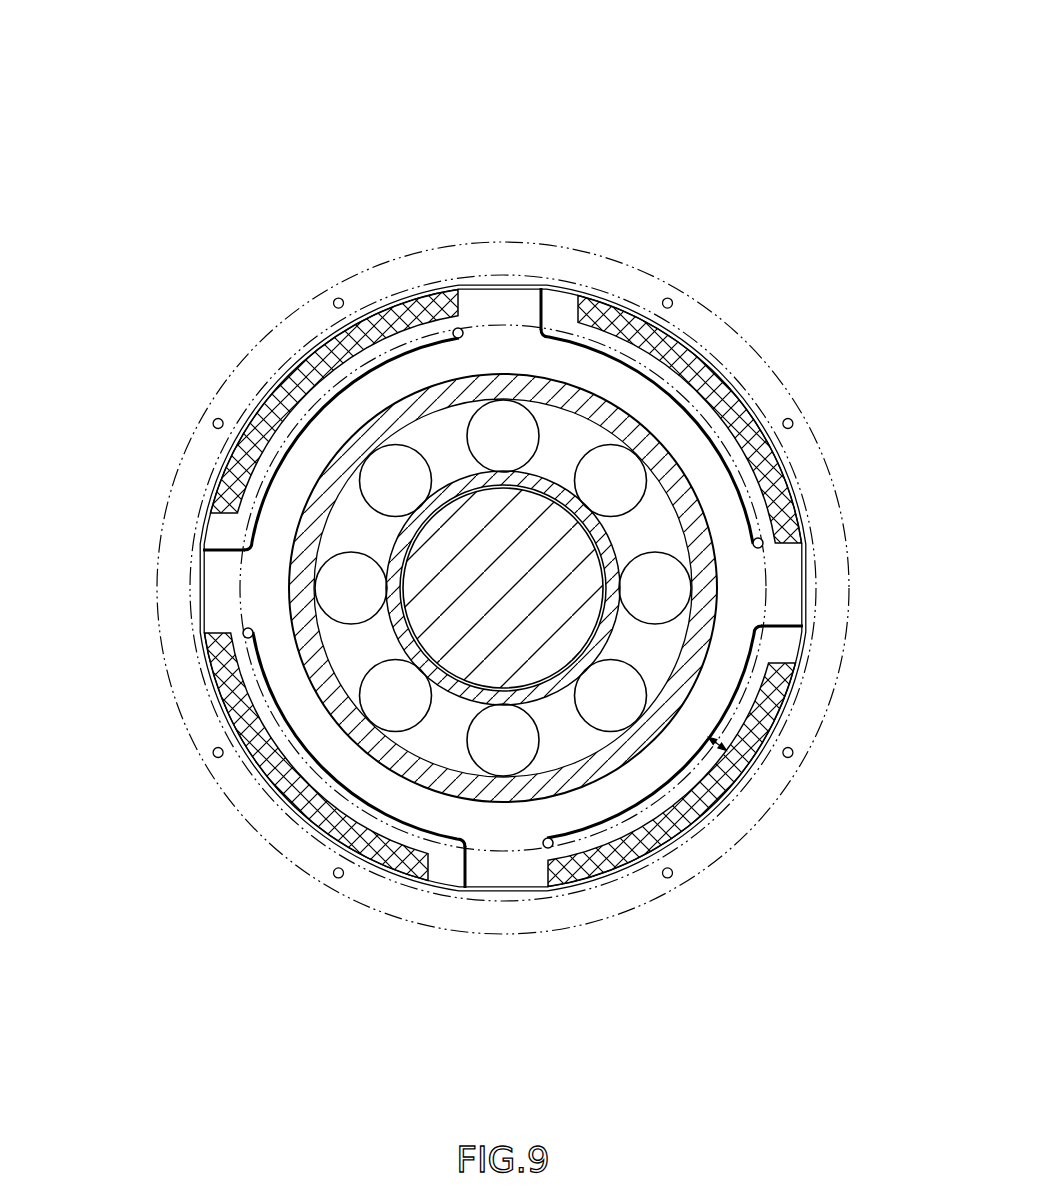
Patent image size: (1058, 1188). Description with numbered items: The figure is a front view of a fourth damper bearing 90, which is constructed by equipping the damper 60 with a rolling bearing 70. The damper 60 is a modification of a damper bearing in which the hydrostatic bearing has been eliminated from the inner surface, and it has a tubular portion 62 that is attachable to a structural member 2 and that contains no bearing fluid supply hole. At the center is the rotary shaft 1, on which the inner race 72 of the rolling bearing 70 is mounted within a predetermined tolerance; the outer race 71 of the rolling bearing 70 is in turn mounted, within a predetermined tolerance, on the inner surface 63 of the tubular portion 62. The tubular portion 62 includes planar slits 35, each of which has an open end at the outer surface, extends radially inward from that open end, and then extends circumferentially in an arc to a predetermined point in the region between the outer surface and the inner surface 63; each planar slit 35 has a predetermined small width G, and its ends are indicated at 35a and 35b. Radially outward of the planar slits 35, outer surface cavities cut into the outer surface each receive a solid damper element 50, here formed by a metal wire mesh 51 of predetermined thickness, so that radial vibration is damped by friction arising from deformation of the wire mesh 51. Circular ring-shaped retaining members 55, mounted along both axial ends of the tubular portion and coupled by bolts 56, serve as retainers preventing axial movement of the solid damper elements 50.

The rotary shaft 1 is at (455, 548).
The structural member 2 is at (888, 429).
The planar slit 35 is at (663, 390).
The first end of holding piece 35a is at (543, 287).
The second end of holding piece 35b is at (458, 330).
The solid damper element 50 is at (505, 592).
The wire mesh 51 is at (748, 398).
The retaining member 55 is at (832, 721).
The bolt 56 is at (797, 758).
The damper 60 is at (556, 287).
The tubular portion 62 is at (634, 201).
The inner surface 63 is at (395, 410).
The rolling bearing 70 is at (465, 742).
The outer race 71 is at (345, 705).
The inner race 72 is at (398, 630).
The fourth damper bearing 90 is at (420, 104).
The width G is at (708, 737).